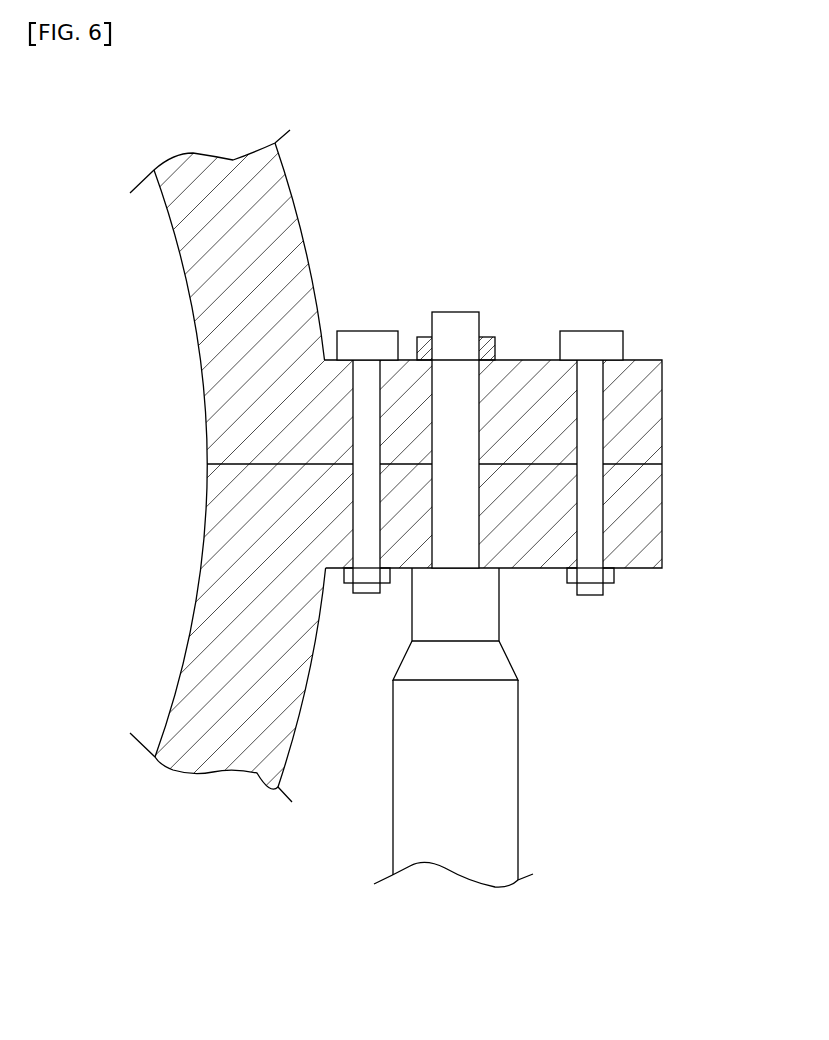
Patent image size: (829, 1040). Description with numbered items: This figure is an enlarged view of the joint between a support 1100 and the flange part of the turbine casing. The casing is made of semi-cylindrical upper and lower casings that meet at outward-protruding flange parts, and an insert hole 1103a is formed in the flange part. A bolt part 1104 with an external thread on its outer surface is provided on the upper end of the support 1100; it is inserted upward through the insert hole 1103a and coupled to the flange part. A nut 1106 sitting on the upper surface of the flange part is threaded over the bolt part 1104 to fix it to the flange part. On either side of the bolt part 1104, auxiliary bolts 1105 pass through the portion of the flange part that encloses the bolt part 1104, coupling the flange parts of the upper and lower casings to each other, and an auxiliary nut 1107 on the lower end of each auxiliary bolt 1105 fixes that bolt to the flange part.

The support 1100 is at (500, 793).
The insert hole 1103a is at (478, 407).
The bolt part 1104 is at (447, 320).
The auxiliary bolt 1105 is at (605, 340).
The nut 1106 is at (484, 337).
The auxiliary nut 1107 is at (602, 573).